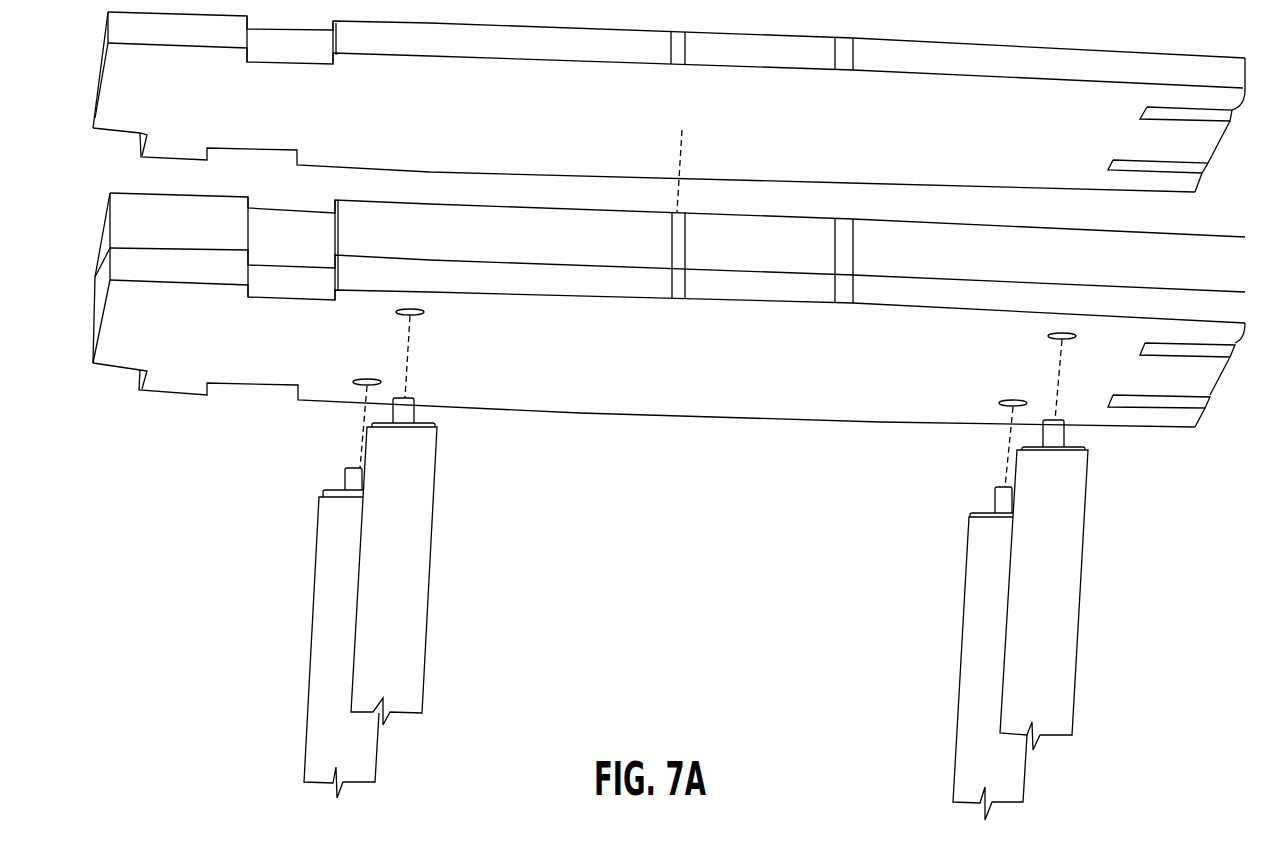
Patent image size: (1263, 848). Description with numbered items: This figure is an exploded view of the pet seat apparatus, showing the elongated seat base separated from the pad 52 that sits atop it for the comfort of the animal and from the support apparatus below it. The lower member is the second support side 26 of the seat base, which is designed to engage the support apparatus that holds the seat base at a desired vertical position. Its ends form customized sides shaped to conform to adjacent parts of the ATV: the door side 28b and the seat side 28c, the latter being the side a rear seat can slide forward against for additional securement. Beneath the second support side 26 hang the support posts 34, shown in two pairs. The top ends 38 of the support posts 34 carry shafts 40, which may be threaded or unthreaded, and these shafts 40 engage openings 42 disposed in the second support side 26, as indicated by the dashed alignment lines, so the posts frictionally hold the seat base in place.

The second support side 26 is at (650, 330).
The door side 28b is at (866, 237).
The seat side 28c is at (93, 260).
The support post 34 is at (327, 575).
The top end 38 is at (327, 488).
The shaft 40 is at (347, 470).
The opening 42 is at (383, 378).
The pad 52 is at (93, 80).